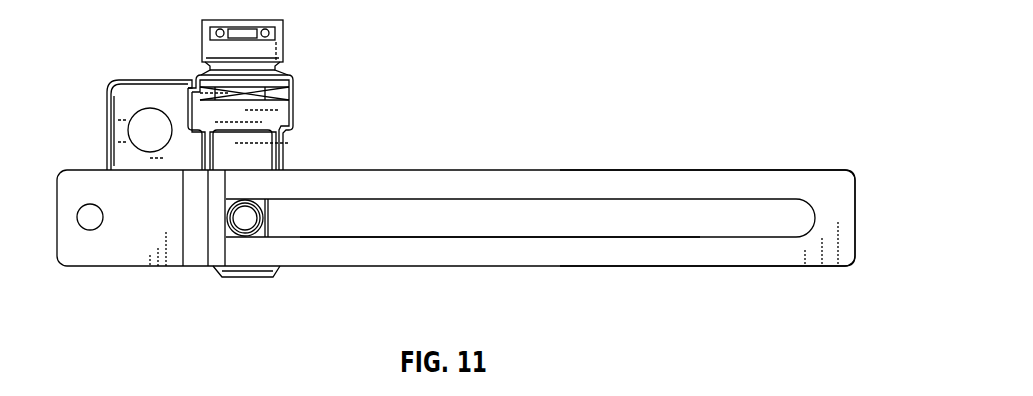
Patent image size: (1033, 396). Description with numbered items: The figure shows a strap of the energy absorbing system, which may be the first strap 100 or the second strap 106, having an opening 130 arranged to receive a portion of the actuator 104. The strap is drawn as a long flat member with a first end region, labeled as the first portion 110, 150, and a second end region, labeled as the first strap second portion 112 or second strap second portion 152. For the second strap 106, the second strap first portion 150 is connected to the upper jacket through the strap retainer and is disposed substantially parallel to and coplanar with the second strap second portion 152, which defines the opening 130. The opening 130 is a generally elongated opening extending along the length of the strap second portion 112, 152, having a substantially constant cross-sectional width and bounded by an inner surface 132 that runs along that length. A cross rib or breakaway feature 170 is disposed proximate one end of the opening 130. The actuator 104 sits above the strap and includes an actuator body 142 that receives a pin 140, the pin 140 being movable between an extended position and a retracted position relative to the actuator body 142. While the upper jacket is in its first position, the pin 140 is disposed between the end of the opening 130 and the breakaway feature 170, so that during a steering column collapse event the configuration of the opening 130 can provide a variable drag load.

The first strap 100 is at (456, 174).
The second strap 106 is at (685, 150).
The actuator 104 is at (289, 69).
The actuator body 142 is at (278, 118).
The breakaway feature 170 is at (270, 218).
The inner surface 132 is at (537, 203).
The opening 130 is at (469, 237).
The pin 140 is at (244, 222).
The first end 110 is at (88, 263).
The second strap first portion 150 is at (103, 255).
The first strap second portion 112 is at (707, 245).
The second strap second portion 152 is at (630, 257).